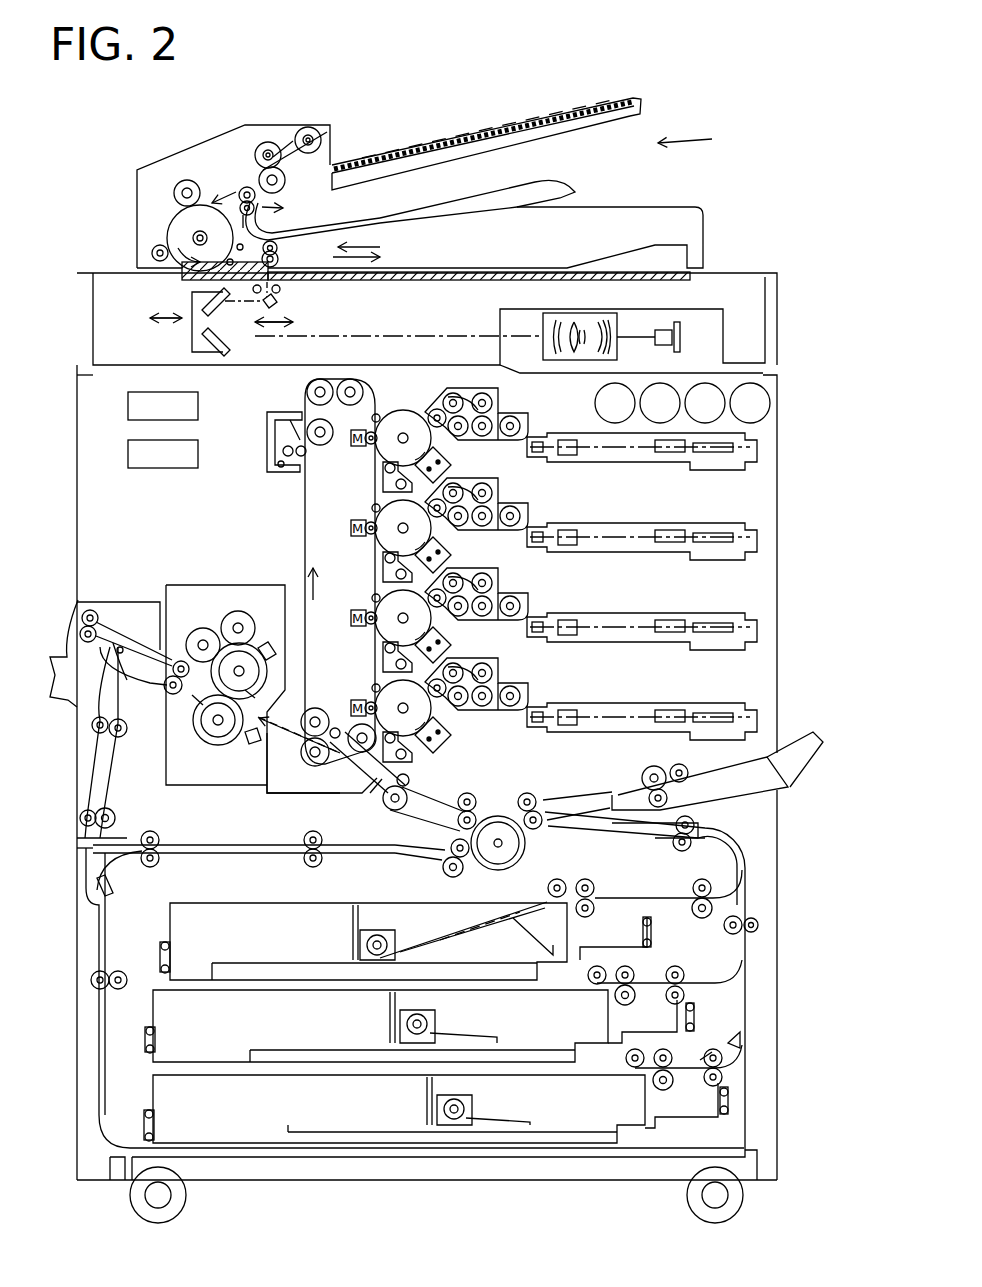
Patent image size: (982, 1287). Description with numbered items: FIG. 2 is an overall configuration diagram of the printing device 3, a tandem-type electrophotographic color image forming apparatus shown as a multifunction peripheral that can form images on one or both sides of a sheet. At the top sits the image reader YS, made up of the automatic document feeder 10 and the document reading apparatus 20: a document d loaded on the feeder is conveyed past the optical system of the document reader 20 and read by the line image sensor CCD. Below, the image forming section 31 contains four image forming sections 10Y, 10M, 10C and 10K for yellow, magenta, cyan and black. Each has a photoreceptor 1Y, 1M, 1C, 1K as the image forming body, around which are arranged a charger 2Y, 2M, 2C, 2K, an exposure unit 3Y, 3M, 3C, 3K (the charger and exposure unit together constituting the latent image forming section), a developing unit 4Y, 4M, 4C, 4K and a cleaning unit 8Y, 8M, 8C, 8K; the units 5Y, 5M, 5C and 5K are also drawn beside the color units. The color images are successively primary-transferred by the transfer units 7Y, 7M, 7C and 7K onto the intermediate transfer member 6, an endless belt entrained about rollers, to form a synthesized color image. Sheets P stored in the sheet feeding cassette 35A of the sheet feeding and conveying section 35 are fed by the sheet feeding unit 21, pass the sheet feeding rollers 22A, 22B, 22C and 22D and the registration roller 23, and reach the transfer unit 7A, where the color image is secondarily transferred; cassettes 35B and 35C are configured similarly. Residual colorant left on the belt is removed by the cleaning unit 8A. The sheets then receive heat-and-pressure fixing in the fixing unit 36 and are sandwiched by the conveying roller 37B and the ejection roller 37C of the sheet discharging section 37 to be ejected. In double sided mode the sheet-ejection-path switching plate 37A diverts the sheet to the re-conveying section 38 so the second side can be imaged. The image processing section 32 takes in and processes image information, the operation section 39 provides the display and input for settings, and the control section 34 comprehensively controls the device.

The automatic document feeder 10 is at (690, 102).
The document d is at (495, 123).
The image reader YS is at (740, 163).
The operation section 39 is at (766, 258).
The document reading apparatus 20 is at (787, 318).
The line image sensor CCD is at (690, 326).
The image forming section 31 is at (400, 374).
The printing device 3 is at (64, 420).
The image processing section 32 is at (128, 410).
The control section 34 is at (128, 457).
The cleaning unit 8A is at (268, 444).
The intermediate transfer member 6 is at (300, 521).
The image forming section 10Y is at (459, 439).
The image forming section 10M is at (461, 520).
The image forming section 10C is at (460, 614).
The image forming section 10K is at (454, 704).
The photoreceptor 1Y is at (398, 418).
The photoreceptor 1M is at (372, 514).
The photoreceptor 1C is at (372, 606).
The photoreceptor 1K is at (378, 700).
The charger 2Y is at (447, 467).
The charger 2M is at (447, 557).
The charger 2C is at (447, 647).
The charger 2K is at (455, 733).
The exposure unit 3Y is at (634, 466).
The exposure unit 3M is at (634, 556).
The exposure unit 3C is at (708, 613).
The exposure unit 3K is at (660, 702).
The developing unit 4Y is at (447, 404).
The developing unit 4M is at (500, 492).
The developing unit 4C is at (505, 580).
The developing unit 4K is at (500, 672).
The toner container (Y) 5Y is at (615, 403).
The toner container (M) 5M is at (660, 403).
The toner container (C) 5C is at (705, 403).
The toner container (K) 5K is at (750, 403).
The transfer unit 7Y is at (368, 450).
The transfer unit 7M is at (368, 540).
The transfer unit 7C is at (370, 630).
The transfer unit 7K is at (362, 700).
The cleaning unit 8Y is at (383, 485).
The cleaning unit 8M is at (383, 578).
The cleaning unit 8C is at (383, 662).
The cleaning unit 8K is at (414, 762).
The transfer unit 7A is at (323, 767).
The fixing unit 36 is at (198, 584).
The sheet discharging section 37 is at (54, 622).
The sheet-ejection-path switching plate 37A is at (100, 668).
The conveying roller 37B is at (100, 618).
The ejection roller 37C is at (67, 655).
The registration roller 23 is at (386, 809).
The sheet feeding roller 22D is at (471, 792).
The sheet feeding roller 22C is at (540, 822).
The sheet feeding unit 21 is at (583, 880).
The sheet feeding roller 22B is at (673, 842).
The sheet feeding roller 22A is at (696, 888).
The re-conveying section 38 is at (62, 858).
The sheet feeding and conveying section 35 is at (328, 998).
The sheet feeding cassette 35A is at (250, 905).
The sheet feeding cassette 35B is at (166, 1010).
The sheet feeding cassette 35C is at (167, 1094).
The sheet P is at (473, 923).